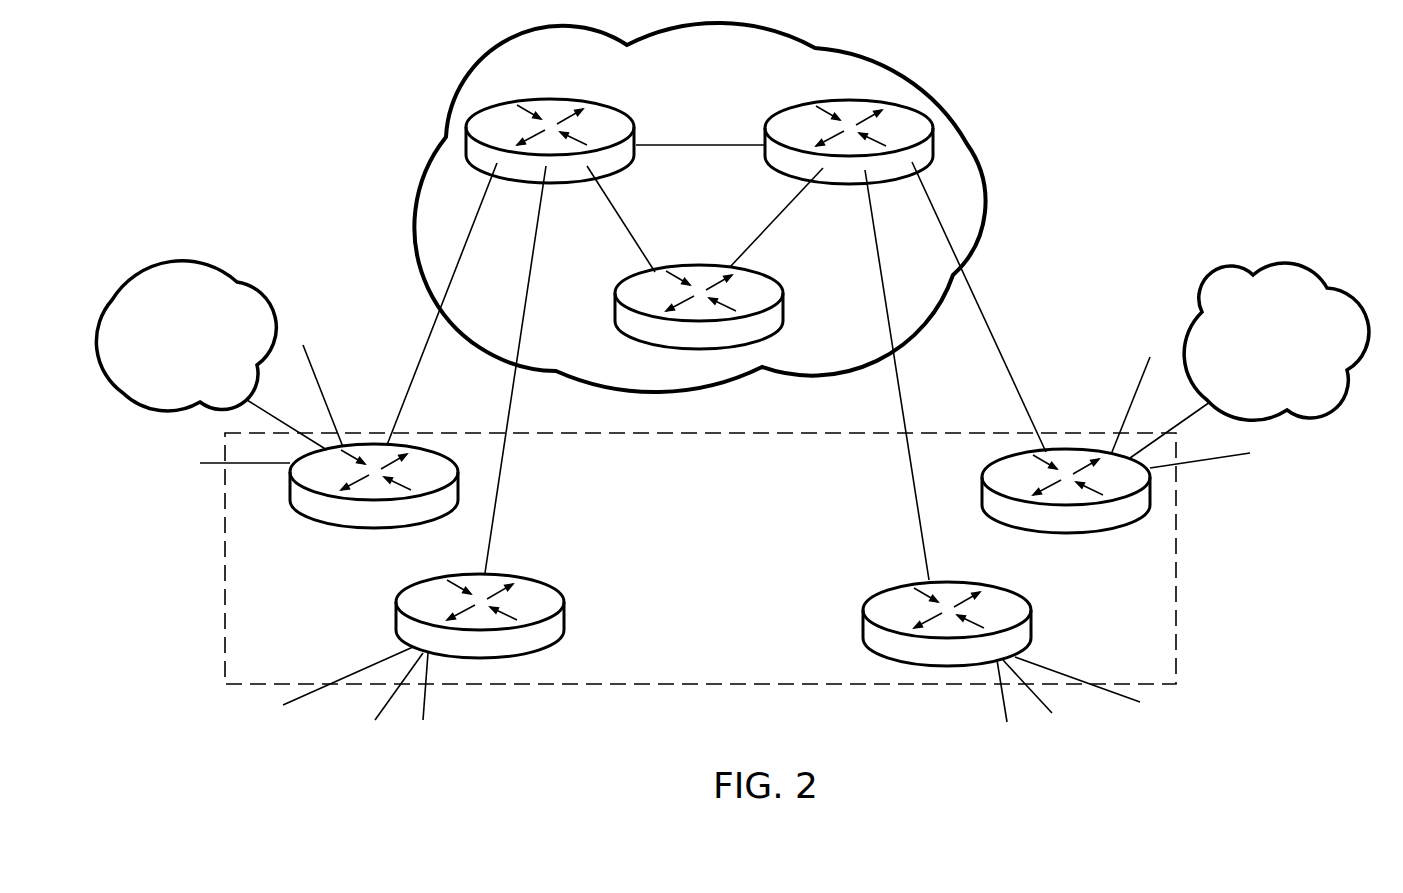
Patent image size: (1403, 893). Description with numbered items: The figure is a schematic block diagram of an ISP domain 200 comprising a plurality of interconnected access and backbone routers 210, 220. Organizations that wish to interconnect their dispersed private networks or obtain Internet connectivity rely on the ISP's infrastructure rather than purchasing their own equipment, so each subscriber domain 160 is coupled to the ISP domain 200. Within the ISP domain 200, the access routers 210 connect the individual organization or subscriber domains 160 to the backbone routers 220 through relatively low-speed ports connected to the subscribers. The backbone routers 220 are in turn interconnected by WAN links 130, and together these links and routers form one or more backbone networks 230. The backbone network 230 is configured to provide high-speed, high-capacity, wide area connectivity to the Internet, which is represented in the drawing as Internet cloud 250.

The WAN link 130 is at (703, 145).
The organization domain 160 is at (732, 340).
The ISP domain 200 is at (700, 558).
The access router 210 is at (414, 528).
The backbone router 220 is at (569, 99).
The backbone network 230 is at (703, 216).
The Internet cloud 250 is at (699, 207).